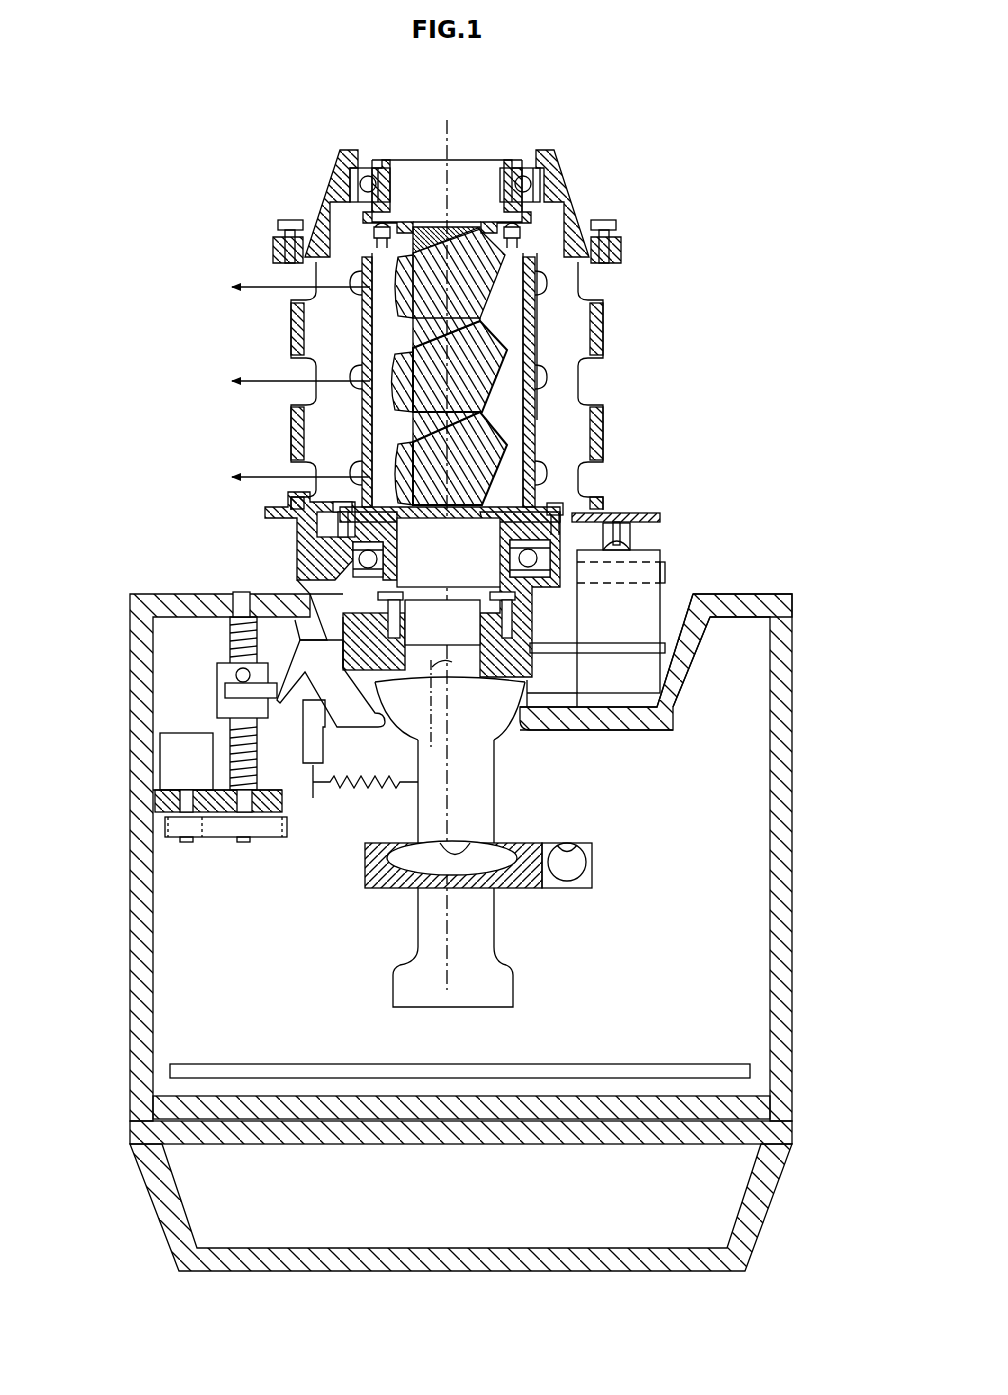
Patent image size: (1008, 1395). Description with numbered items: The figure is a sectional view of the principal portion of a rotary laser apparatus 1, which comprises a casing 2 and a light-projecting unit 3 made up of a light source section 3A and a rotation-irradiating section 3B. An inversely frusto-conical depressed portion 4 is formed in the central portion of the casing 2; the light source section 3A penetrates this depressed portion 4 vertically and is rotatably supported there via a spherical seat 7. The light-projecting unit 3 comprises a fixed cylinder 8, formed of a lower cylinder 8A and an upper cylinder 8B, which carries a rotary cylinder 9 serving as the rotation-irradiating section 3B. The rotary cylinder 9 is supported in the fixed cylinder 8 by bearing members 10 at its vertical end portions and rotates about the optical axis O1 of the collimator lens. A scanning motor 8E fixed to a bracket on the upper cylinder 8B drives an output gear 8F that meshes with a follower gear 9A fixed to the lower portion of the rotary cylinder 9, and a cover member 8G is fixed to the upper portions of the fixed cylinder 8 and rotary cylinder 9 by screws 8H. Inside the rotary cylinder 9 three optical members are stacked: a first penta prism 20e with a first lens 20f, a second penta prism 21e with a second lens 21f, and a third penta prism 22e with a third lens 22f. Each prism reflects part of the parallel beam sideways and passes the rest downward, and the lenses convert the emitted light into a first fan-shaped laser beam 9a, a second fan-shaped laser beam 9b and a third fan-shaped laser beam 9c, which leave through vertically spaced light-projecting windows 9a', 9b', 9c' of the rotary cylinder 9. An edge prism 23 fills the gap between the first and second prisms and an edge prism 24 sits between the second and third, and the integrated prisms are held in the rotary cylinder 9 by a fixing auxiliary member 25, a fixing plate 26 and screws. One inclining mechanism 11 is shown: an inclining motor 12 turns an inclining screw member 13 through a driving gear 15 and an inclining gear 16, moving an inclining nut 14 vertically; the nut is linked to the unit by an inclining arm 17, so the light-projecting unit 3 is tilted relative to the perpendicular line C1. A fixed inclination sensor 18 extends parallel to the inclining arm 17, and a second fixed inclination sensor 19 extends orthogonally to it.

The rotary laser apparatus 1 is at (775, 1248).
The casing 2 is at (792, 892).
The light-projecting unit 3 is at (283, 580).
The light source section 3A is at (515, 797).
The rotation-irradiating section 3B is at (596, 406).
The depressed portion 4 is at (660, 700).
The spherical seat 7 is at (505, 718).
The fixed cylinder 8 is at (580, 402).
The lower cylinder 8A is at (700, 668).
The upper cylinder 8B is at (233, 606).
The scanning motor 8E is at (650, 600).
The output gear 8F is at (625, 514).
The cover member 8G is at (343, 200).
The screws 8H is at (285, 240).
The rotary cylinder 9 is at (603, 312).
The follower gear 9A is at (600, 550).
The first fan-shaped laser beam 9a is at (251, 490).
The second fan-shaped laser beam 9b is at (265, 405).
The third fan-shaped laser beam 9c is at (260, 307).
The light-projecting window 9a' is at (266, 329).
The light-projecting window 9b' is at (269, 429).
The light-projecting window 9c' is at (247, 511).
The bearing members 10 is at (528, 190).
The inclining mechanism 11 is at (178, 725).
The inclining motor 12 is at (178, 742).
The inclining screw member 13 is at (230, 660).
The inclining nut 14 is at (217, 695).
The driving gear 15 is at (160, 820).
The inclining gear 16 is at (270, 830).
The inclining arm 17 is at (302, 700).
The fixed inclination sensor 18 is at (392, 866).
The fixed inclination sensor 19 is at (567, 866).
The first penta prism 20e is at (500, 455).
The first lens 20f is at (400, 458).
The second penta prism 21e is at (500, 360).
The second lens 21f is at (400, 378).
The third penta prism 22e is at (500, 270).
The third lens 22f is at (400, 283).
The edge prism 23 is at (537, 385).
The edge prism 24 is at (537, 300).
The fixing auxiliary member 25 is at (462, 225).
The fixing plate 26 is at (470, 228).
The perpendicular line C1 is at (447, 185).
The optical axis O1 is at (416, 752).